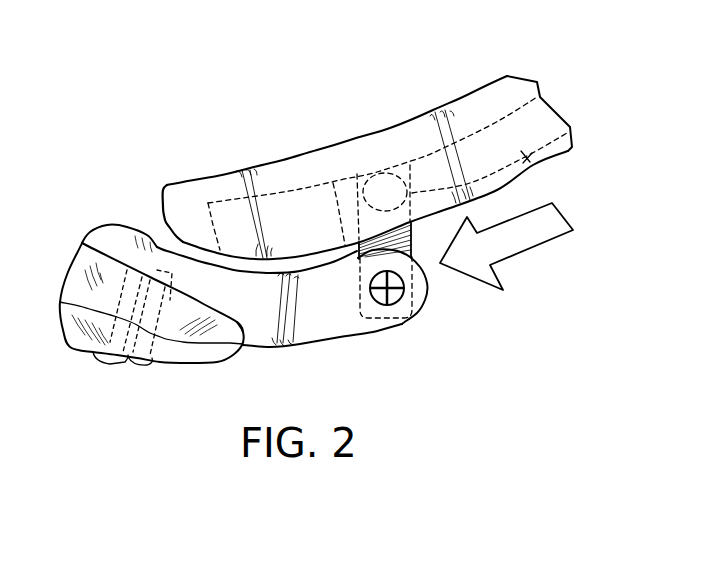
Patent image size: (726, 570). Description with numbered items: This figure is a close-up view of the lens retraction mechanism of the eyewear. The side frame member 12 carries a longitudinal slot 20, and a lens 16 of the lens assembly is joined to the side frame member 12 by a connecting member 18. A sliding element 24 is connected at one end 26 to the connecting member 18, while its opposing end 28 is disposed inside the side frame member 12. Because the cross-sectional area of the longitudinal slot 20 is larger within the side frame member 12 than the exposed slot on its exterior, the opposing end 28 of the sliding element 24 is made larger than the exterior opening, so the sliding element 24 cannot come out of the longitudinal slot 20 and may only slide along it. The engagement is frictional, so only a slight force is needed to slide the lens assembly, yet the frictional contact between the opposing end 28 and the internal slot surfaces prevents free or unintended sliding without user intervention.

The side frame member 12 is at (482, 107).
The lens 16 is at (87, 328).
The connecting member 18 is at (338, 326).
The longitudinal slot 20 is at (537, 165).
The sliding element 24 is at (413, 247).
The end of sliding element 26 is at (398, 300).
The opposing end 28 is at (378, 190).